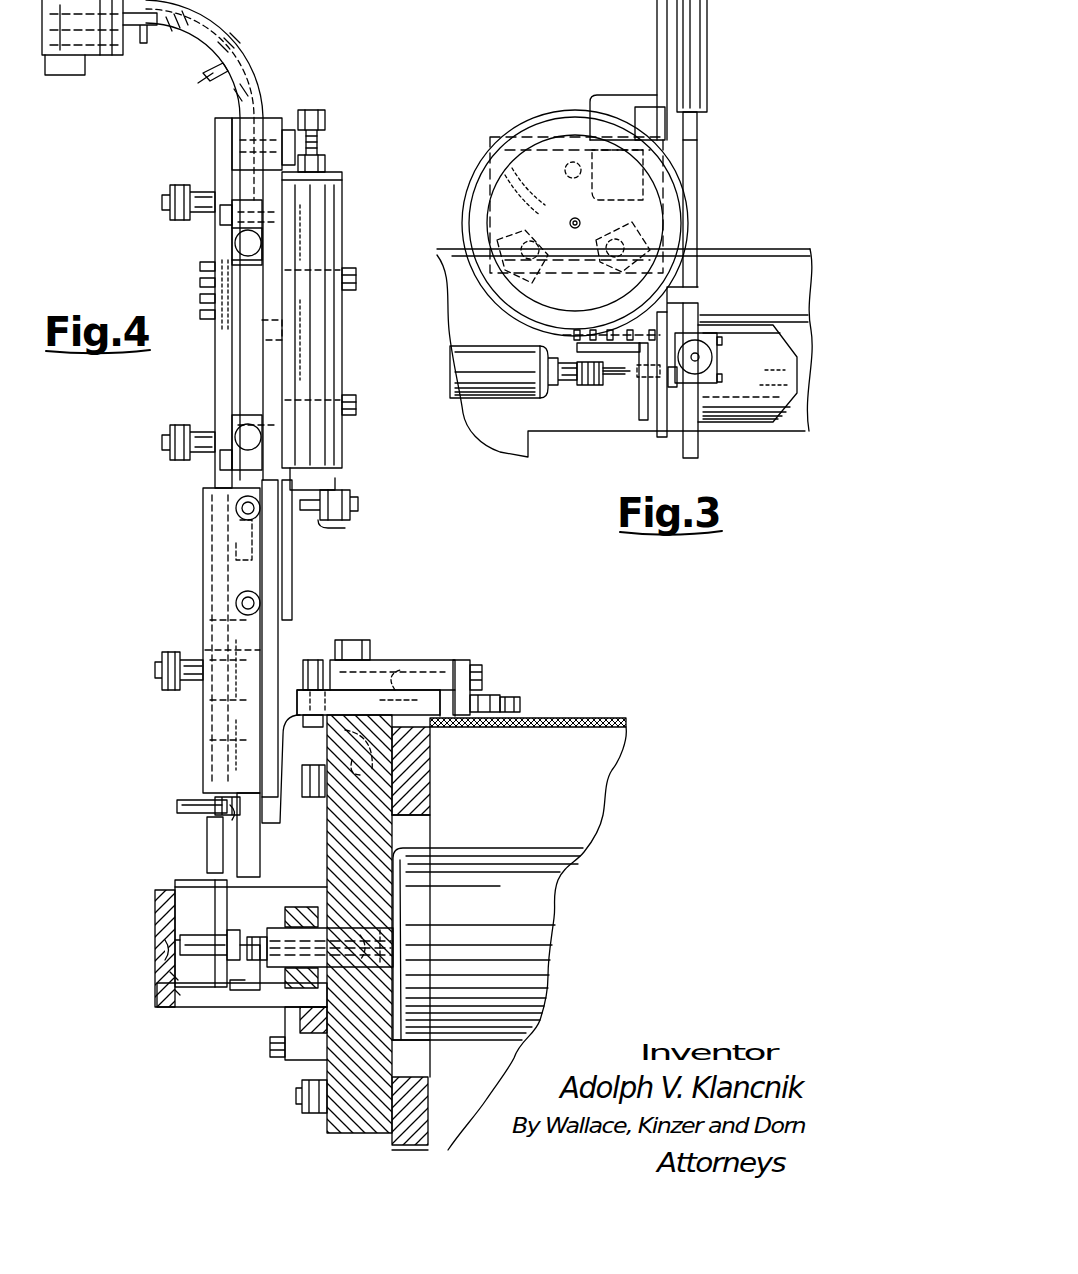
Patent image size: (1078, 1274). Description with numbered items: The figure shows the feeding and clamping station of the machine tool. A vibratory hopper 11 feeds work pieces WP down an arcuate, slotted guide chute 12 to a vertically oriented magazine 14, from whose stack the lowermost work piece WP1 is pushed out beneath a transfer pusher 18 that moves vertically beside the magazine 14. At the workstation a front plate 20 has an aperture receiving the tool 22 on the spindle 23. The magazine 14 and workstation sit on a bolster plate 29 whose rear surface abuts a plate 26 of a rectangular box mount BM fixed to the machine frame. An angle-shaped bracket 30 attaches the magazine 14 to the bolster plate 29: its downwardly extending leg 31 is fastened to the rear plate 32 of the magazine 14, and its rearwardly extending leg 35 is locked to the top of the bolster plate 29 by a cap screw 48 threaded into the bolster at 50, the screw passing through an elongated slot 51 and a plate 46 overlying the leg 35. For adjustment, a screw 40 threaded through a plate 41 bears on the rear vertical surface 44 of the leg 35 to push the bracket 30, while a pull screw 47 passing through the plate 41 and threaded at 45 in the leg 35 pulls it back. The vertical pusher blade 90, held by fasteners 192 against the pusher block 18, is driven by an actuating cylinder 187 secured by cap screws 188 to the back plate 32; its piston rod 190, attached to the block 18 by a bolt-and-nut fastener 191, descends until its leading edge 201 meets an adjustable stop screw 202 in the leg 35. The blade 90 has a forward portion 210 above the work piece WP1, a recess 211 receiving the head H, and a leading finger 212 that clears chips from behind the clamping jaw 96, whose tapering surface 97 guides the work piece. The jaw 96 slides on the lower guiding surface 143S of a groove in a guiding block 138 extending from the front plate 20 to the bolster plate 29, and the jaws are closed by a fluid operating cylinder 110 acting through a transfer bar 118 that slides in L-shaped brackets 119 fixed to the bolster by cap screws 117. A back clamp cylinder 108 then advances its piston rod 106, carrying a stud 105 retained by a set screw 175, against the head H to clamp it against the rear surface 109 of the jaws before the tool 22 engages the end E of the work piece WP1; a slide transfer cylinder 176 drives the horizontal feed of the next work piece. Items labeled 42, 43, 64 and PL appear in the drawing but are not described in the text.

In FIG. 4, the hopper 11 is at (106, 62).
In FIG. 3, the hopper 11 is at (544, 100).
In FIG. 4, the guide chute 12 is at (244, 48).
In FIG. 3, the guide chute 12 is at (616, 322).
In FIG. 4, the magazine 14 is at (198, 562).
In FIG. 3, the magazine 14 is at (666, 315).
In FIG. 4, the transfer pusher 18 is at (292, 556).
In FIG. 4, the front plate 20 is at (158, 920).
In FIG. 3, the front plate 20 is at (645, 422).
In FIG. 3, the tool 22 is at (612, 385).
In FIG. 3, the spindle 23 is at (485, 385).
In FIG. 4, the plate 26 is at (420, 800).
In FIG. 4, the bolster plate 29 is at (330, 826).
In FIG. 3, the bolster plate 29 is at (698, 450).
In FIG. 4, the angle-shaped bracket 30 is at (300, 660).
In FIG. 4, the downwardly extending leg 31 is at (284, 750).
In FIG. 4, the rear plate 32 is at (288, 632).
In FIG. 4, the rearwardly extending leg 35 is at (368, 690).
In FIG. 4, the screw 40 is at (514, 705).
In FIG. 4, the plate 41 is at (465, 664).
In FIG. 4, the pin 42 is at (460, 718).
In FIG. 4, the screw 43 is at (483, 672).
In FIG. 4, the rear vertical surface 44 is at (445, 718).
In FIG. 4, the threaded portion 45 is at (425, 690).
In FIG. 4, the plate 46 is at (397, 668).
In FIG. 4, the pull screw 47 is at (492, 700).
In FIG. 4, the cap screw 48 is at (356, 648).
In FIG. 4, the threaded location 50 is at (363, 753).
In FIG. 4, the elongated slot 51 is at (399, 683).
In FIG. 4, the clamp bolt 64 is at (176, 186).
In FIG. 4, the vertical pusher 90 is at (258, 728).
In FIG. 4, the clamping jaw 96 is at (222, 892).
In FIG. 4, the tapering surface 97 is at (202, 907).
In FIG. 4, the stud 105 is at (256, 982).
In FIG. 4, the piston rod 106 is at (370, 947).
In FIG. 4, the back clamp cylinder 108 is at (495, 862).
In FIG. 3, the back clamp cylinder 108 is at (755, 393).
In FIG. 4, the rear surface 109 is at (226, 895).
In FIG. 3, the fluid operating cylinder 110 is at (622, 100).
In FIG. 4, the cap screws 117 is at (272, 1043).
In FIG. 4, the slideable bar 118 is at (305, 1013).
In FIG. 4, the L-shaped brackets 119 is at (292, 1052).
In FIG. 4, the guiding block 138 is at (198, 1005).
In FIG. 4, the lower guiding surface 143S is at (168, 980).
In FIG. 4, the set screw 175 is at (286, 912).
In FIG. 3, the slide transfer cylinder 176 is at (700, 52).
In FIG. 4, the actuating cylinder 187 is at (314, 332).
In FIG. 3, the actuating cylinder 187 is at (698, 350).
In FIG. 4, the cap screws 188 is at (350, 272).
In FIG. 4, the piston rod 190 is at (320, 478).
In FIG. 4, the bolt and nut fastener 191 is at (358, 504).
In FIG. 4, the fasteners 192 is at (238, 508).
In FIG. 4, the leading edge 201 is at (340, 528).
In FIG. 4, the stop screw 202 is at (313, 660).
In FIG. 4, the forward portion 210 is at (208, 745).
In FIG. 4, the recess 211 is at (225, 797).
In FIG. 4, the leading finger 212 is at (247, 850).
In FIG. 4, the box mount BM is at (575, 722).
In FIG. 3, the box mount BM is at (770, 320).
In FIG. 4, the end E is at (180, 810).
In FIG. 4, the head H is at (236, 810).
In FIG. 4, the plane PL is at (178, 1003).
In FIG. 4, the work piece WP is at (210, 936).
In FIG. 4, the lowermost work piece WP1 is at (182, 806).